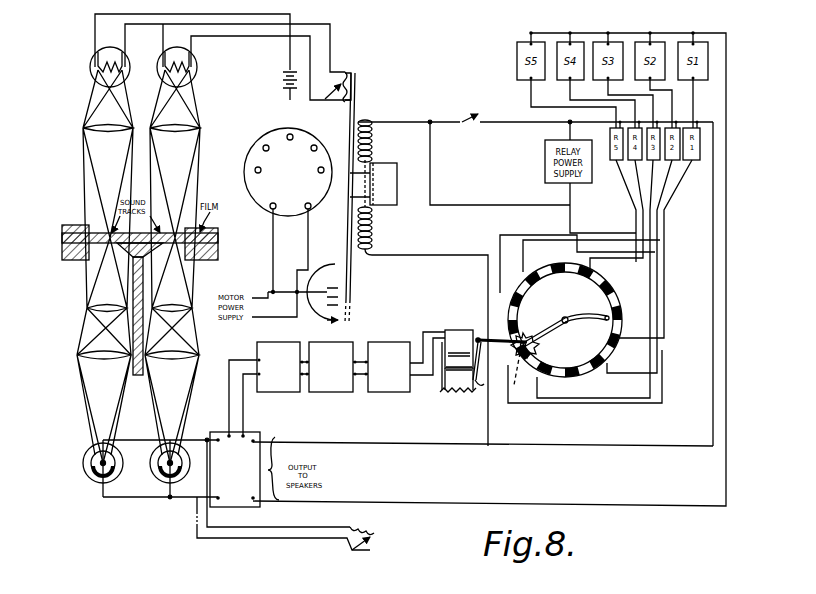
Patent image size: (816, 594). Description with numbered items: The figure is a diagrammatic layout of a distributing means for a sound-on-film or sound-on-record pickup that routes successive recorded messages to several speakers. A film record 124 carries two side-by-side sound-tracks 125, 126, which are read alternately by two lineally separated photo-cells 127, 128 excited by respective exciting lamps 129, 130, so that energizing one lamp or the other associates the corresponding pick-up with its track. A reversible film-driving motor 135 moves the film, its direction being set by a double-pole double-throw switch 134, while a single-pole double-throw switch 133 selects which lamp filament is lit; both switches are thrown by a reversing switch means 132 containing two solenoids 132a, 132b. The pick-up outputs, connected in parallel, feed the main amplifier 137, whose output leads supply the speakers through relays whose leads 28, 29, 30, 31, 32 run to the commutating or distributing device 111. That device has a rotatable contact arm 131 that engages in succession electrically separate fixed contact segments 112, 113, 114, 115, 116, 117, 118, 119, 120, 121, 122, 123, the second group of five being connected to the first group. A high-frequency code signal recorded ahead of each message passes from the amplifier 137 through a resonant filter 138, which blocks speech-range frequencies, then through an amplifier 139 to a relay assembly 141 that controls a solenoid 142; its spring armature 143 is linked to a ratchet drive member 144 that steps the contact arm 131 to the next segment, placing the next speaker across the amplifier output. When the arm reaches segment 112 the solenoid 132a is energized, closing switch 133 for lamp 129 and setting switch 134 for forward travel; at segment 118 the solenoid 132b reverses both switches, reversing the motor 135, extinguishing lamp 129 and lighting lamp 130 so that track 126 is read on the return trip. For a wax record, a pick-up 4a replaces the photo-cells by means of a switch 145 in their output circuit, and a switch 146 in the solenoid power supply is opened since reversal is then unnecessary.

The exciting lamp 129 is at (88, 62).
The exciting lamp 130 is at (197, 84).
The film record 124 is at (84, 226).
The sound-track 125 is at (100, 222).
The sound-track 126 is at (192, 226).
The photo-cell 127 is at (82, 475).
The photo-cell 128 is at (150, 476).
The single-pole double-throw switch 133 is at (332, 100).
The reversible film-driving motor 135 is at (288, 172).
The double-pole double-throw switch 134 is at (342, 307).
The reversing switch means 132 is at (378, 183).
The solenoid 132a is at (373, 146).
The solenoid 132b is at (373, 238).
The switch 146 is at (470, 127).
The resonant filter 138 is at (268, 392).
The amplifier 139 is at (318, 392).
The relay assembly 141 is at (384, 392).
The solenoid 142 is at (458, 330).
The spring armature 143 is at (490, 389).
The amplifier 137 is at (240, 507).
The switch 145 is at (185, 500).
The pick-up 4a is at (371, 535).
The commutating or distributing device 111 is at (558, 382).
The contact segment 112 is at (606, 314).
The contact segment 113 is at (600, 295).
The contact segment 114 is at (592, 275).
The contact segment 115 is at (563, 273).
The contact segment 116 is at (530, 280).
The contact segment 117 is at (524, 303).
The contact segment 118 is at (513, 326).
The contact segment 119 is at (522, 375).
The contact segment 120 is at (540, 347).
The contact segment 121 is at (576, 378).
The contact segment 122 is at (603, 350).
The contact segment 123 is at (613, 348).
The rotatable contact arm 131 is at (572, 322).
The ratchet drive member 144 is at (532, 314).
The relay lead 28 is at (661, 249).
The relay lead 29 is at (647, 266).
The relay lead 30 is at (604, 279).
The relay lead 31 is at (622, 218).
The relay lead 32 is at (626, 211).